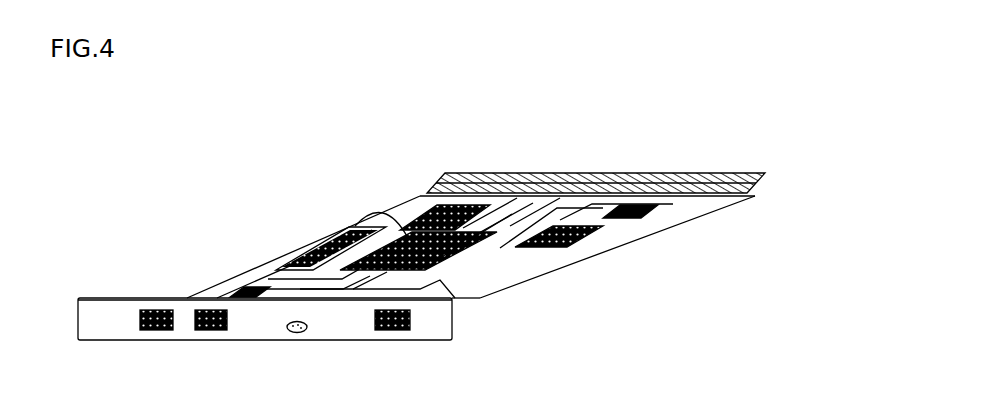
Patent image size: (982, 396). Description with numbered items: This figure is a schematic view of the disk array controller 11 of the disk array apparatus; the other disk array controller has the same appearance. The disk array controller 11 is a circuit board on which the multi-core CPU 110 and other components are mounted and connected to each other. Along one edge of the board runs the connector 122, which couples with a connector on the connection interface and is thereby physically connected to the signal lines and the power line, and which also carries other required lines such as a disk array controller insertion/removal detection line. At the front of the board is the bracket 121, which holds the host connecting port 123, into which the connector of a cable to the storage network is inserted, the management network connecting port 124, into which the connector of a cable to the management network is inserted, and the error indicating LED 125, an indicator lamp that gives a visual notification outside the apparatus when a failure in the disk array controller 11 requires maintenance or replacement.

The disk array controller 11 is at (241, 272).
The multi-core CPU 110 is at (378, 212).
The bracket 121 is at (80, 328).
The connector 122 is at (598, 174).
The host connecting port 123 is at (155, 330).
The management network connecting port 124 is at (388, 330).
The error indicating LED 125 is at (298, 333).